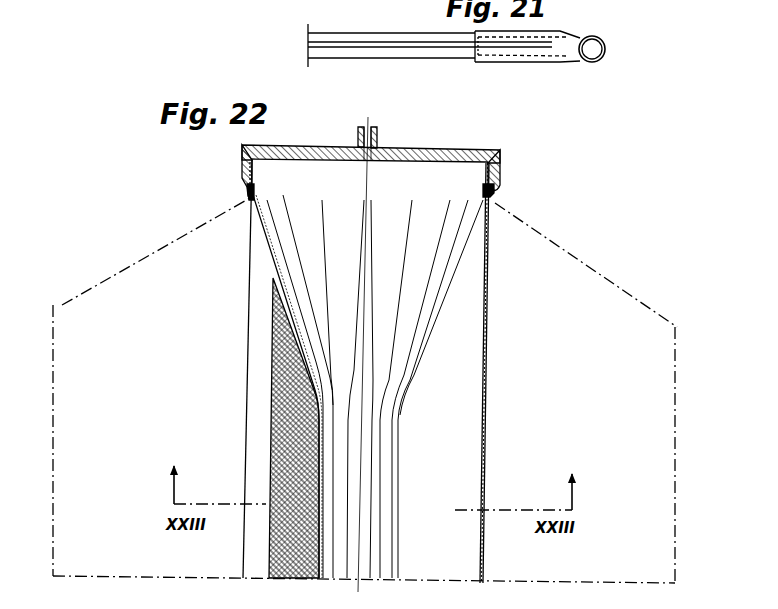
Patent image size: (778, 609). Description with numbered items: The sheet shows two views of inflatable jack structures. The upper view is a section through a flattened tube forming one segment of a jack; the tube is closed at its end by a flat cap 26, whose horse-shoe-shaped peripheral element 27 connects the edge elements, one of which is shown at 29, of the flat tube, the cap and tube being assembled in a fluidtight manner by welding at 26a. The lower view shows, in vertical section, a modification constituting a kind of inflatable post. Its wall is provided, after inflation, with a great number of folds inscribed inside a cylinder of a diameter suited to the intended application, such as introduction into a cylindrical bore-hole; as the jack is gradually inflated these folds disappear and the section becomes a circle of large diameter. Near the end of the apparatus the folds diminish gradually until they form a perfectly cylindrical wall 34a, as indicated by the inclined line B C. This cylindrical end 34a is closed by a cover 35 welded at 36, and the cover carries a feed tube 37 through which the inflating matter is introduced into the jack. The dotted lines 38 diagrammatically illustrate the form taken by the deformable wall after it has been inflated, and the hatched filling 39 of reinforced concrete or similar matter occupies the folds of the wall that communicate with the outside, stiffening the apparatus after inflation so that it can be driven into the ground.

In FIG. 21, the inner wire/tube 29 is at (308, 36).
In FIG. 21, the ball tip 27 is at (606, 50).
In FIG. 21, the sleeve 26 is at (545, 58).
In FIG. 21, the sleeve inner end 26a is at (476, 58).
In FIG. 22, the cap lining / left flange 34a is at (252, 163).
In FIG. 22, the cap plate 35 is at (456, 152).
In FIG. 22, the right flange gasket 36 is at (497, 189).
In FIG. 22, the inlet stem 37 is at (410, 118).
In FIG. 22, the container outline 38 is at (133, 262).
In FIG. 22, the hatched insert wall 39 is at (300, 462).
In FIG. 22, the inclined line end point B is at (316, 412).
In FIG. 22, the inclined line end point C is at (246, 197).